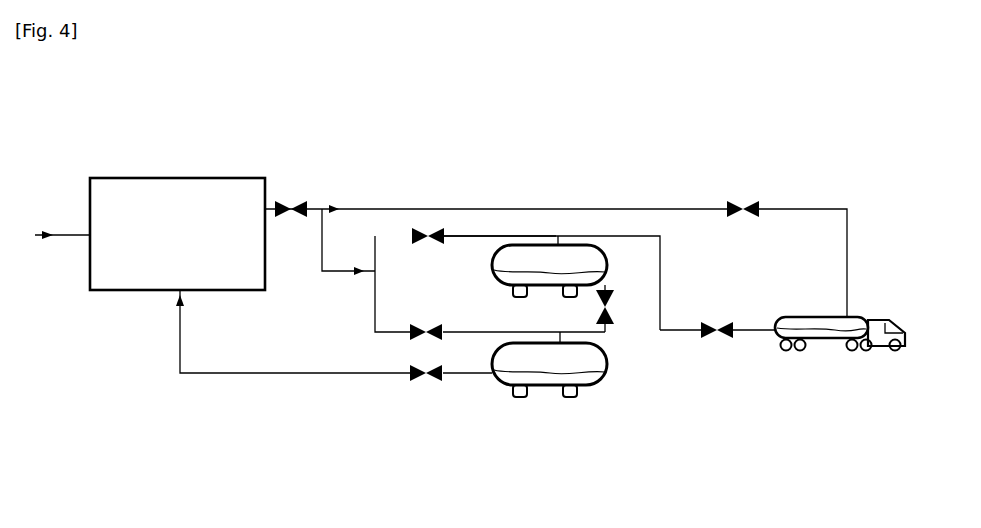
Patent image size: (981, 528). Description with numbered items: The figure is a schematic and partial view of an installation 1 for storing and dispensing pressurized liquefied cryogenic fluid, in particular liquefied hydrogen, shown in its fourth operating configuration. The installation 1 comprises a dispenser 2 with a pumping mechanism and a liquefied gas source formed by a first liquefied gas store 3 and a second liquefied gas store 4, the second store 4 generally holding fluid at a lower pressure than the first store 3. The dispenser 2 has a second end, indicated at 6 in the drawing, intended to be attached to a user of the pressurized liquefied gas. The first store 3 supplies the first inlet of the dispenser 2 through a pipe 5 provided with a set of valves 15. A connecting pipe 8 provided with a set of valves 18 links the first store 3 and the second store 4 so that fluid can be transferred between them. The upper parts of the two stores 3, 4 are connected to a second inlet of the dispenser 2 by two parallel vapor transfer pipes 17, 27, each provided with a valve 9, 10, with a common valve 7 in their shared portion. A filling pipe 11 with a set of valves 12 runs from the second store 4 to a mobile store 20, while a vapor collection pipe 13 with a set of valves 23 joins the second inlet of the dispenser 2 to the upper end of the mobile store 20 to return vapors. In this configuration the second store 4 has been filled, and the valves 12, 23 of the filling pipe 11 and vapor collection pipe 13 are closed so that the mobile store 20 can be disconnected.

The installation 1 is at (764, 434).
The dispenser 2 is at (148, 207).
The first liquefied gas store 3 is at (610, 352).
The second liquefied gas store 4 is at (580, 255).
The pipe 5 is at (253, 378).
The inlet line 6 is at (73, 240).
The common valve 7 is at (289, 200).
The connecting pipe 8 is at (608, 335).
The valve 9 is at (418, 221).
The valve 10 is at (420, 340).
The filling pipe 11 is at (686, 334).
The set of valves 12 is at (722, 343).
The vapor collection pipe 13 is at (794, 201).
The set of valves 15 is at (420, 382).
The vapor transfer pipe 17 is at (481, 228).
The set of valves 18 is at (616, 309).
The mobile store 20 is at (886, 312).
The set of valves 23 is at (739, 189).
The vapor transfer pipe 27 is at (463, 326).